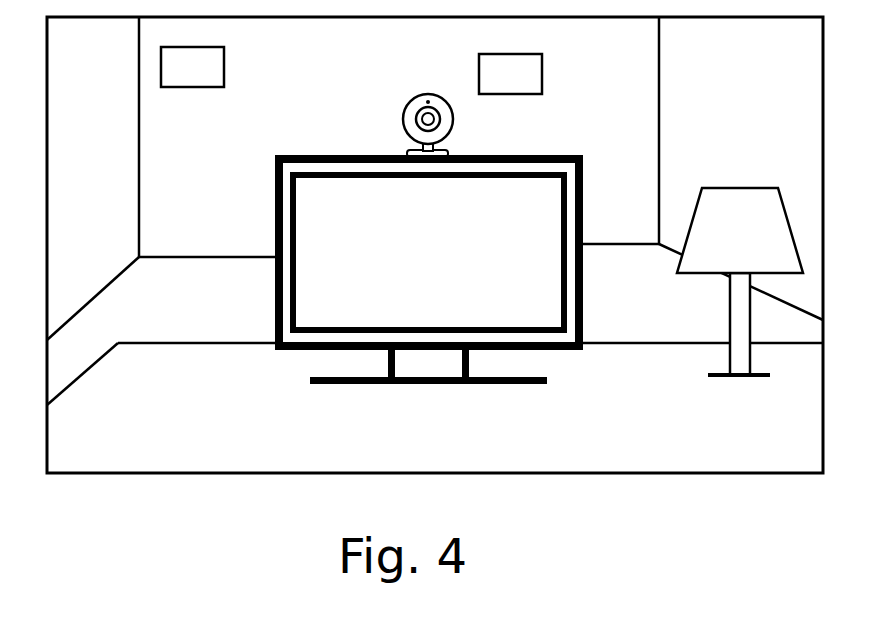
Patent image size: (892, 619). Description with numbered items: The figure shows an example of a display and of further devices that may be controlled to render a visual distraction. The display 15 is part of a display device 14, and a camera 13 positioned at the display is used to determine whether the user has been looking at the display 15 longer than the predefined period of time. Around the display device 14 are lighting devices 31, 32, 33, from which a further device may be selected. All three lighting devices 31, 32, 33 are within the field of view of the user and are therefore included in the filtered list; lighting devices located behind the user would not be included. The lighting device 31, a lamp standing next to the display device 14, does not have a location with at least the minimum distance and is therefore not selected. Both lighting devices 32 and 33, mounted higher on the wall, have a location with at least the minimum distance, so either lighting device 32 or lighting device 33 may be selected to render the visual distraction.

The camera 13 is at (403, 122).
The display device 14 is at (275, 293).
The display 15 is at (429, 271).
The lighting device 31 is at (740, 282).
The lighting device 32 is at (192, 67).
The lighting device 33 is at (510, 74).